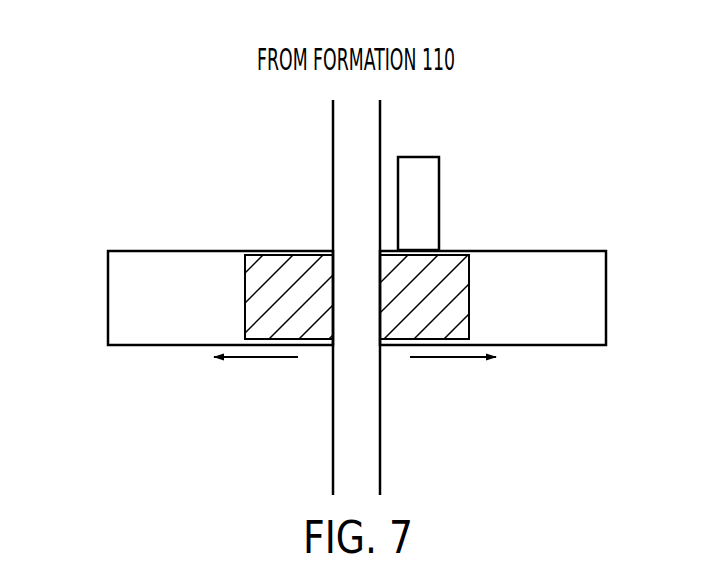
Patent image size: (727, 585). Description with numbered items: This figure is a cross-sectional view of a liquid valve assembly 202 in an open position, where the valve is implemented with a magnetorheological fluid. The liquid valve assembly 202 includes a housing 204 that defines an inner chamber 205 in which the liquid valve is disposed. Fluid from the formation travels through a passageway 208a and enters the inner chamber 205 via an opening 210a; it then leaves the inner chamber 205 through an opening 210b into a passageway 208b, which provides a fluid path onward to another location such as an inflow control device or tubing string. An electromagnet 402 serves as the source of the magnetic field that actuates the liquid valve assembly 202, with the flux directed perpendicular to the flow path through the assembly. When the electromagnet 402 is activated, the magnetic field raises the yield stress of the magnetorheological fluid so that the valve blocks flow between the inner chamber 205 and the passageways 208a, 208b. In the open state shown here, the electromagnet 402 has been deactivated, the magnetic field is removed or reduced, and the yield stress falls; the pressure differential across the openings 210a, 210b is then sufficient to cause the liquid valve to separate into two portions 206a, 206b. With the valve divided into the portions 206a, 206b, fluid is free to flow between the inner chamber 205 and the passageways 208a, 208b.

The liquid valve assembly 202 is at (160, 137).
The housing 204 is at (172, 249).
The inner chamber 205 is at (137, 310).
The portion 206a is at (237, 300).
The portion 206b is at (480, 298).
The passageway 208a is at (353, 141).
The passageway 208b is at (352, 458).
The opening 210a is at (355, 240).
The opening 210b is at (353, 352).
The electromagnet 402 is at (448, 183).